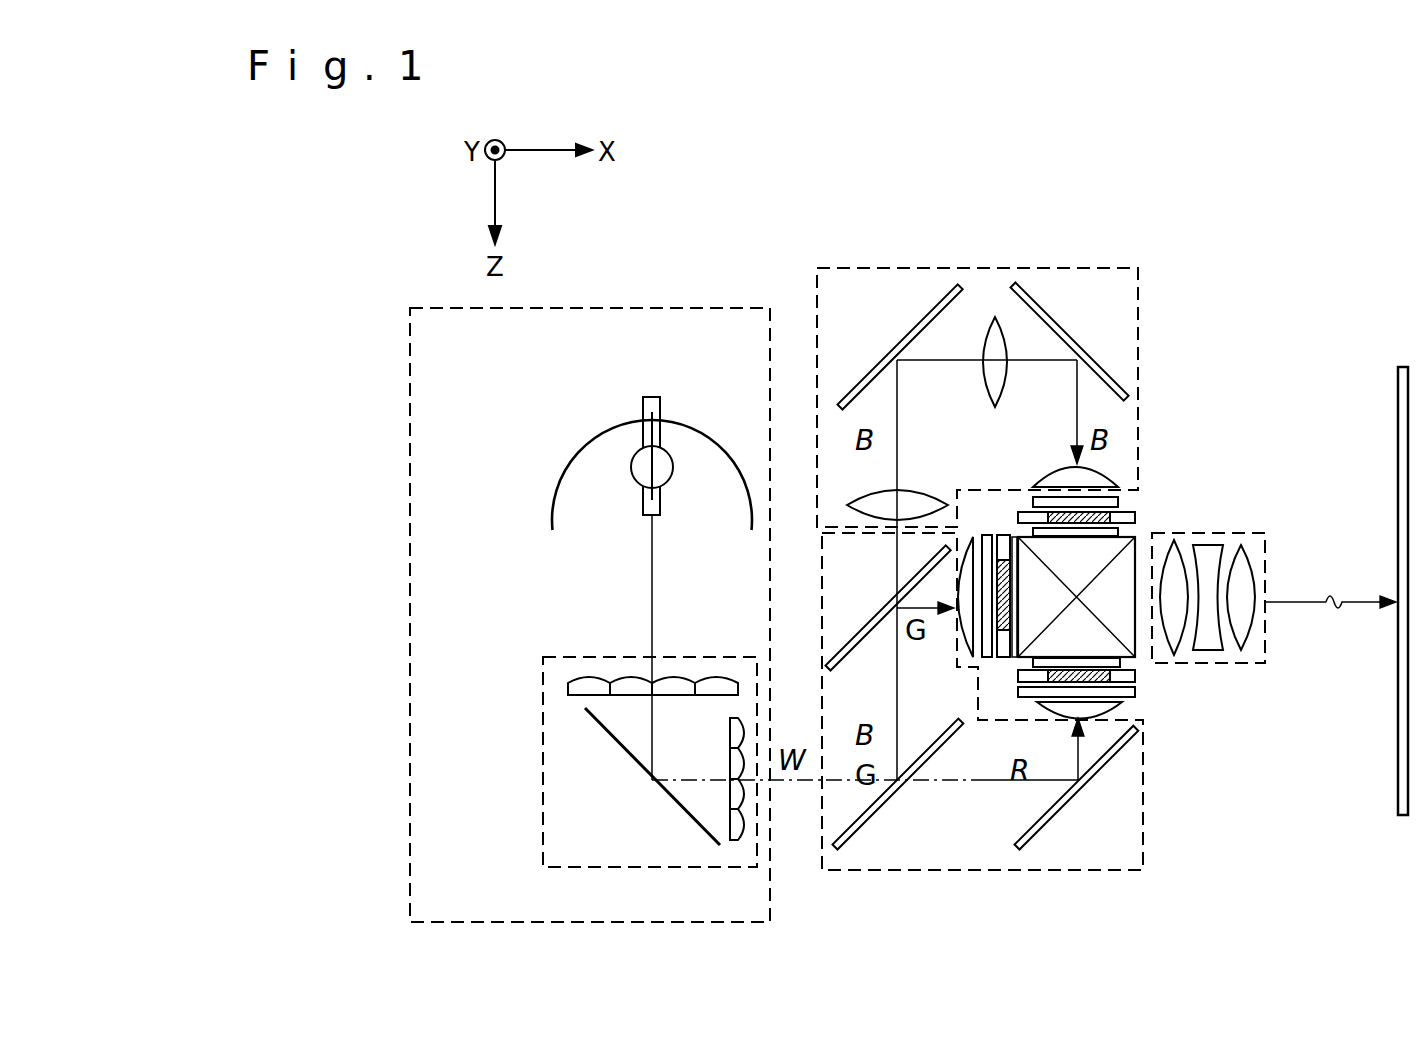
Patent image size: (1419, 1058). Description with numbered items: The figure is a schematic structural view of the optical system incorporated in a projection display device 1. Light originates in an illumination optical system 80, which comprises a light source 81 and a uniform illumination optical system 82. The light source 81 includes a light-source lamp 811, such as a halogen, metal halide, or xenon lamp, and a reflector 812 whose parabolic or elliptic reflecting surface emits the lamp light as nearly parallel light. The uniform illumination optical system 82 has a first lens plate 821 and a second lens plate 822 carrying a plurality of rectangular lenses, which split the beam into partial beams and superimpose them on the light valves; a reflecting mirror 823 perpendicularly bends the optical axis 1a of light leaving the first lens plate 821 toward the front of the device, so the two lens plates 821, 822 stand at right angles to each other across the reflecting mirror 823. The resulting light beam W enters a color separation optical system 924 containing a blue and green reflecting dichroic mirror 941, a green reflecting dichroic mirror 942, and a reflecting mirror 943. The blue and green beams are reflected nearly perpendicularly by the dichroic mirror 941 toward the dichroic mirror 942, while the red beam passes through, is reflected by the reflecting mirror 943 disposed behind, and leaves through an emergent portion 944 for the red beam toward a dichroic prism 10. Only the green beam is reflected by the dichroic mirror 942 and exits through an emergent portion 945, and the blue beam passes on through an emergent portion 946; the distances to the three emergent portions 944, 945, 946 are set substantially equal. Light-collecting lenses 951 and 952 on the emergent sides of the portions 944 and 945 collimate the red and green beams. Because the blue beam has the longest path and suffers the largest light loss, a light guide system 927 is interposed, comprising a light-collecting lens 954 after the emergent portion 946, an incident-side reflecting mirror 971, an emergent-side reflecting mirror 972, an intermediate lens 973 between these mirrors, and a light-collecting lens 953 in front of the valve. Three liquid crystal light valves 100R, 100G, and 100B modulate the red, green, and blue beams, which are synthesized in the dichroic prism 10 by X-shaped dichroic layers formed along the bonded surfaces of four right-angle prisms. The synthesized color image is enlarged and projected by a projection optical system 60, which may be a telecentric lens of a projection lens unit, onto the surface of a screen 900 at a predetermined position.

The projection display device 1 is at (1262, 183).
The optical axis 1a is at (652, 610).
The dichroic prism 10 is at (1122, 567).
The projection optical system 60 is at (1283, 525).
The illumination optical system 80 is at (770, 905).
The light source 81 is at (591, 426).
The light-source lamp 811 is at (633, 448).
The reflector 812 is at (560, 502).
The uniform illumination optical system 82 is at (598, 785).
The first lens plate 821 is at (570, 690).
The second lens plate 822 is at (737, 840).
The reflecting mirror 823 is at (667, 798).
The screen 900 is at (1398, 410).
The color separation optical system 924 is at (1143, 845).
The light guide system 927 is at (818, 268).
The blue and green reflecting dichroic mirror 941 is at (857, 835).
The green reflecting dichroic mirror 942 is at (856, 628).
The reflecting mirror 943 is at (1038, 840).
The emergent portion for the red beam 944 is at (1135, 728).
The emergent portion for the green beam 945 is at (957, 637).
The emergent portion for the blue beam 946 is at (873, 537).
The light-collecting lens 951 is at (1125, 705).
The light-collecting lens 952 is at (985, 555).
The light-collecting lens 953 is at (1103, 475).
The light-collecting lens 954 is at (850, 485).
The incident-side reflecting mirror 971 is at (930, 300).
The emergent-side reflecting mirror 972 is at (1073, 338).
The intermediate lens 973 is at (995, 317).
The liquid crystal light valve 100G is at (1003, 537).
The liquid crystal light valve 100B is at (1137, 512).
The liquid crystal light valve 100R is at (1137, 676).